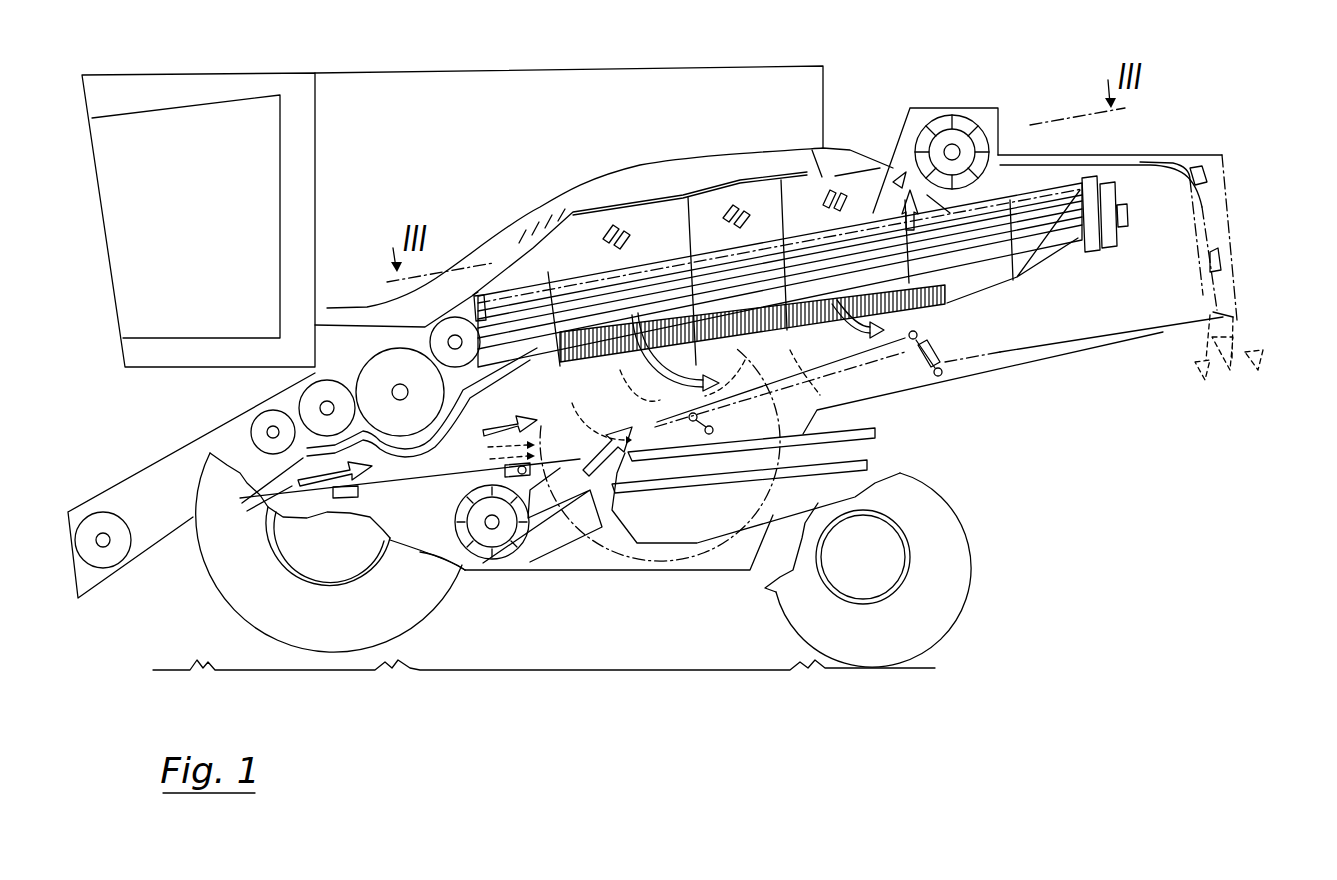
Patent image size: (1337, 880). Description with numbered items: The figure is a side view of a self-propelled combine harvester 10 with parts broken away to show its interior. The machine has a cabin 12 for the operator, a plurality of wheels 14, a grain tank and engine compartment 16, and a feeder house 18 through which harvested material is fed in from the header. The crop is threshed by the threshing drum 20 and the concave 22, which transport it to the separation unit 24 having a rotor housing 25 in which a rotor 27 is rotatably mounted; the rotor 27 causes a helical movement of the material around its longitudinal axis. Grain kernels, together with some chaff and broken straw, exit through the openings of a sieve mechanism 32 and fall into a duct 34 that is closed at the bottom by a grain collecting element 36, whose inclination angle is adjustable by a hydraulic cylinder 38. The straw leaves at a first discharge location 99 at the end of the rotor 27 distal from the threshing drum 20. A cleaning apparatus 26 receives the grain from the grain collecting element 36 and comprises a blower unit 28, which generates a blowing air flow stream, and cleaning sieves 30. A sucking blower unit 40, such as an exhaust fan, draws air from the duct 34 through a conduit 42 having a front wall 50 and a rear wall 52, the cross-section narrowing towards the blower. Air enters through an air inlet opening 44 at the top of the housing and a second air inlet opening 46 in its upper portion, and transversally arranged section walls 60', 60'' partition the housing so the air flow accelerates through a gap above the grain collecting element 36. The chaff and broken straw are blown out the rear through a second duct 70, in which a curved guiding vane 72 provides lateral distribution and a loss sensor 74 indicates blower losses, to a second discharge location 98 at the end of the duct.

The self-propelled combine harvester 10 is at (1175, 150).
The cabin 12 is at (206, 242).
The wheels 14 is at (265, 647).
The grain tank and engine compartment 16 is at (421, 133).
The feeder house 18 is at (130, 492).
The threshing drum 20 is at (377, 362).
The concave 22 is at (407, 450).
The separation unit 24 is at (598, 284).
The rotor housing 25 is at (730, 207).
The cleaning apparatus 26 is at (633, 585).
The rotor 27 is at (1078, 240).
The blower unit 28 is at (492, 525).
The cleaning sieves 30 is at (845, 468).
The sieve mechanism 32 is at (580, 355).
The duct 34 is at (837, 343).
The grain collecting element 36 is at (850, 340).
The hydraulic cylinder 38 is at (945, 353).
The sucking blower unit 40 is at (963, 137).
The conduit 42 is at (878, 260).
The air inlet opening 44 is at (533, 242).
The second air inlet opening 46 is at (730, 207).
The front wall 50 is at (882, 265).
The rear wall 52 is at (1017, 277).
The section wall 60' is at (667, 250).
The section wall 60'' is at (712, 288).
The second duct 70 is at (1207, 230).
The guiding vane 72 is at (1212, 268).
The loss sensor 74 is at (1197, 172).
The second discharge location 98 is at (1247, 380).
The first discharge location 99 is at (1087, 283).